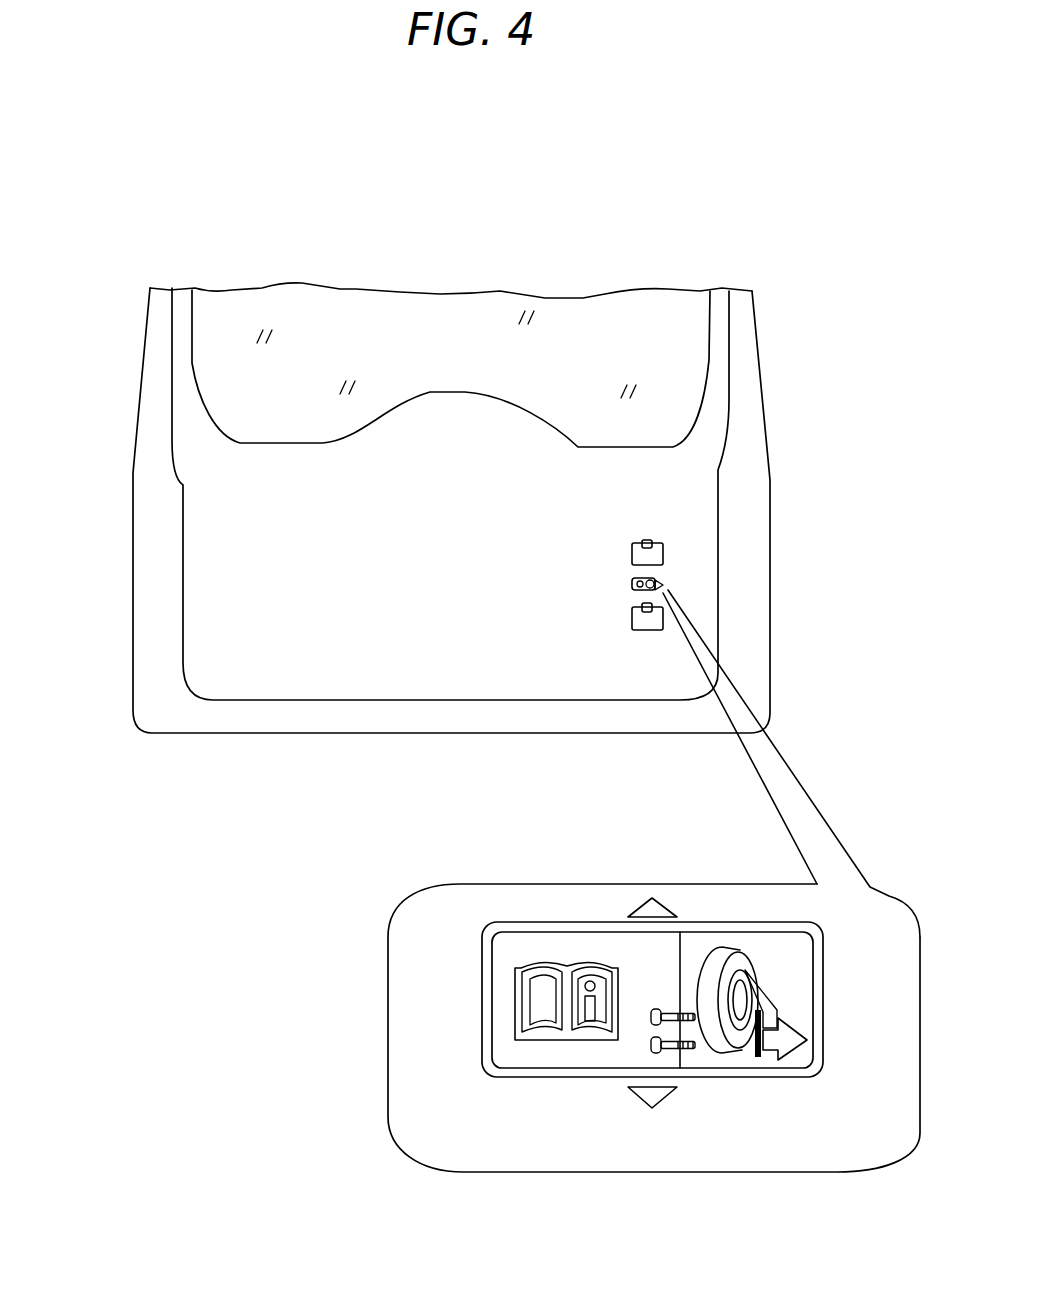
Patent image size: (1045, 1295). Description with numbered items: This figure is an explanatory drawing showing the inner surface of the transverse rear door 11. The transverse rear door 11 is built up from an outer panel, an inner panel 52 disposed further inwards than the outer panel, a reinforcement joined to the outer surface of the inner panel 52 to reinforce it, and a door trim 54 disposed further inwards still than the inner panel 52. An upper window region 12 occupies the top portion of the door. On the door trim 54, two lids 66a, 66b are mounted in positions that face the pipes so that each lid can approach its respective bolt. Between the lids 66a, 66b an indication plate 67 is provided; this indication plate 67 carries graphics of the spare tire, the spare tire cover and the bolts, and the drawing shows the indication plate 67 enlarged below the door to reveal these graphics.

The transverse rear door 11 is at (586, 296).
The window 12 is at (356, 288).
The inner panel 52 is at (133, 457).
The door trim 54 is at (203, 568).
The lid 66a is at (632, 545).
The lid 66b is at (632, 613).
The indication plate 67 is at (665, 582).